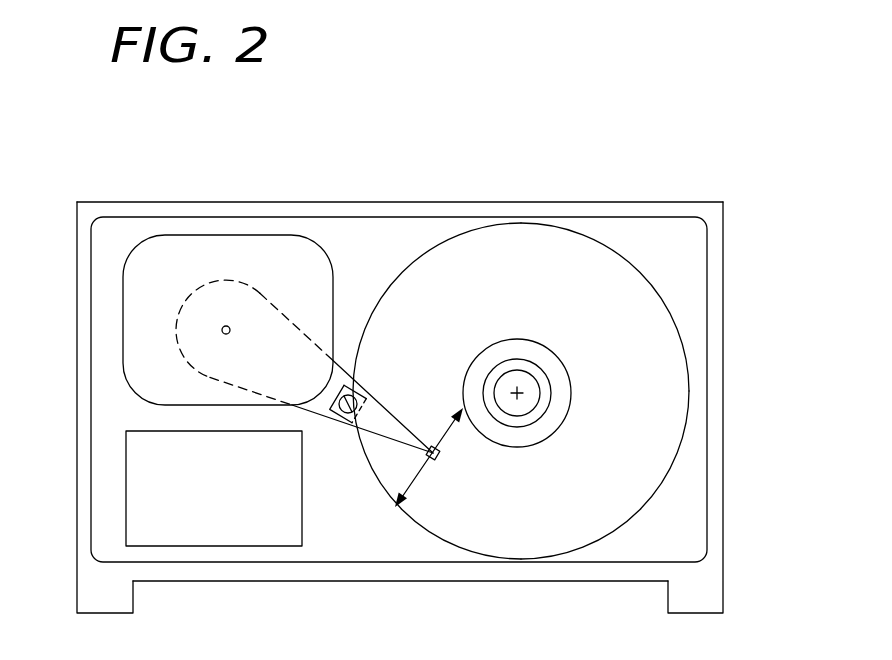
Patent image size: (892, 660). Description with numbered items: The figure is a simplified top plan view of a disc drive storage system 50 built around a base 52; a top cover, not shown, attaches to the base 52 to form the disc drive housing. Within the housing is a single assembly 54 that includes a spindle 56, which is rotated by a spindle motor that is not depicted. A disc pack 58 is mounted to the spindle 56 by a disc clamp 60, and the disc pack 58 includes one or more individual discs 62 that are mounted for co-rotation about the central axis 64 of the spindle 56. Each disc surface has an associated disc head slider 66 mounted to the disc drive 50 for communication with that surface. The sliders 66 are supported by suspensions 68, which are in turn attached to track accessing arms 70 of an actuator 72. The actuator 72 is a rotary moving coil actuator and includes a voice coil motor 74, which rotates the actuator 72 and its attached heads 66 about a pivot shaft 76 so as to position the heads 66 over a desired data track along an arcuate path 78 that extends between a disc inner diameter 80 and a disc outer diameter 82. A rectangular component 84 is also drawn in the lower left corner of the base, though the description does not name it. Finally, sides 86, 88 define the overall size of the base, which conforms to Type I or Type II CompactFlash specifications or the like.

The disc drive storage system 50 is at (600, 140).
The base 52 is at (723, 270).
The single assembly 54 is at (556, 361).
The spindle 56 is at (505, 380).
The disc pack 58 is at (678, 397).
The disc clamp 60 is at (547, 380).
The individual disc 62 is at (582, 346).
The central axis 64 is at (520, 396).
The disc head slider 66 is at (440, 458).
The suspension 68 is at (391, 414).
The track accessing arm 70 is at (331, 409).
The actuator 72 is at (283, 399).
The voice coil motor 74 is at (197, 247).
The pivot shaft 76 is at (232, 326).
The arcuate path 78 is at (420, 483).
The disc inner diameter 80 is at (538, 442).
The disc outer diameter 82 is at (618, 527).
The circuit board 84 is at (142, 463).
The side 86 is at (723, 483).
The side 88 is at (78, 393).